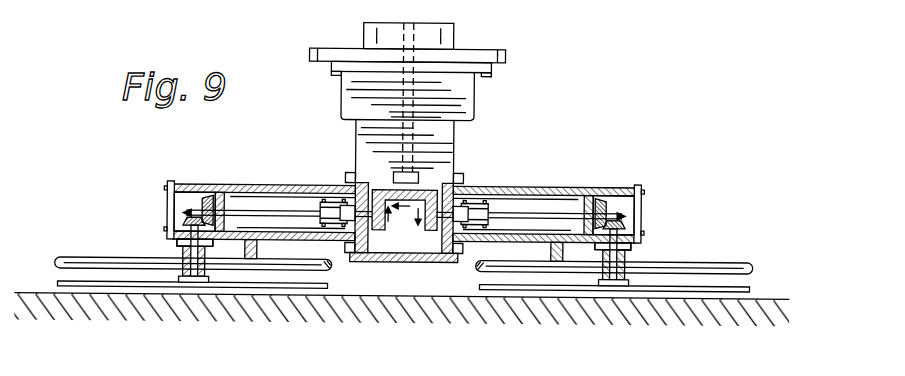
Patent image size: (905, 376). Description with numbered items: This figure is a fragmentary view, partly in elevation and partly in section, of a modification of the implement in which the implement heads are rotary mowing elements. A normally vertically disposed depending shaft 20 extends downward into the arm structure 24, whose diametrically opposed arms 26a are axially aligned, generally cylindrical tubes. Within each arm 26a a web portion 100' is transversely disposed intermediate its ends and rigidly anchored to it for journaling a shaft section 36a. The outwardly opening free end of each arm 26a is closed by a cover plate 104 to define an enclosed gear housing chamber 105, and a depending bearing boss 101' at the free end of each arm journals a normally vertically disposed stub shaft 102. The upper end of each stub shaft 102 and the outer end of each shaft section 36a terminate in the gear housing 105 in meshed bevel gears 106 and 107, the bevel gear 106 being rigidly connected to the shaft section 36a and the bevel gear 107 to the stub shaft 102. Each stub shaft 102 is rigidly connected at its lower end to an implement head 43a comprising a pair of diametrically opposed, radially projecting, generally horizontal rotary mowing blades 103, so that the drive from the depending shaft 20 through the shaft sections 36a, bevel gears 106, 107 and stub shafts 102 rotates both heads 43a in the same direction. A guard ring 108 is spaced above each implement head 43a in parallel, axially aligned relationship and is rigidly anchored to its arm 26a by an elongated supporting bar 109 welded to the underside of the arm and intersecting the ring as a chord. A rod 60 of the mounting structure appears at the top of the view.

The depending shaft 20 is at (413, 33).
The arm structure 24 is at (462, 143).
The arms 26a is at (566, 156).
The shaft sections 36a is at (287, 212).
The implement head 43a is at (676, 357).
The rods 60 is at (235, 4).
The web portion 100' is at (422, 180).
The bearing bosses 101' is at (405, 244).
The stub shafts 102 is at (179, 264).
The rotary mowing blades 103 is at (93, 286).
The cover plates 104 is at (169, 221).
The gear housing chamber 105 is at (193, 201).
The bevel gear 106 is at (211, 196).
The bevel gear 107 is at (185, 212).
The guard rings 108 is at (58, 258).
The supporting bar 109 is at (258, 248).